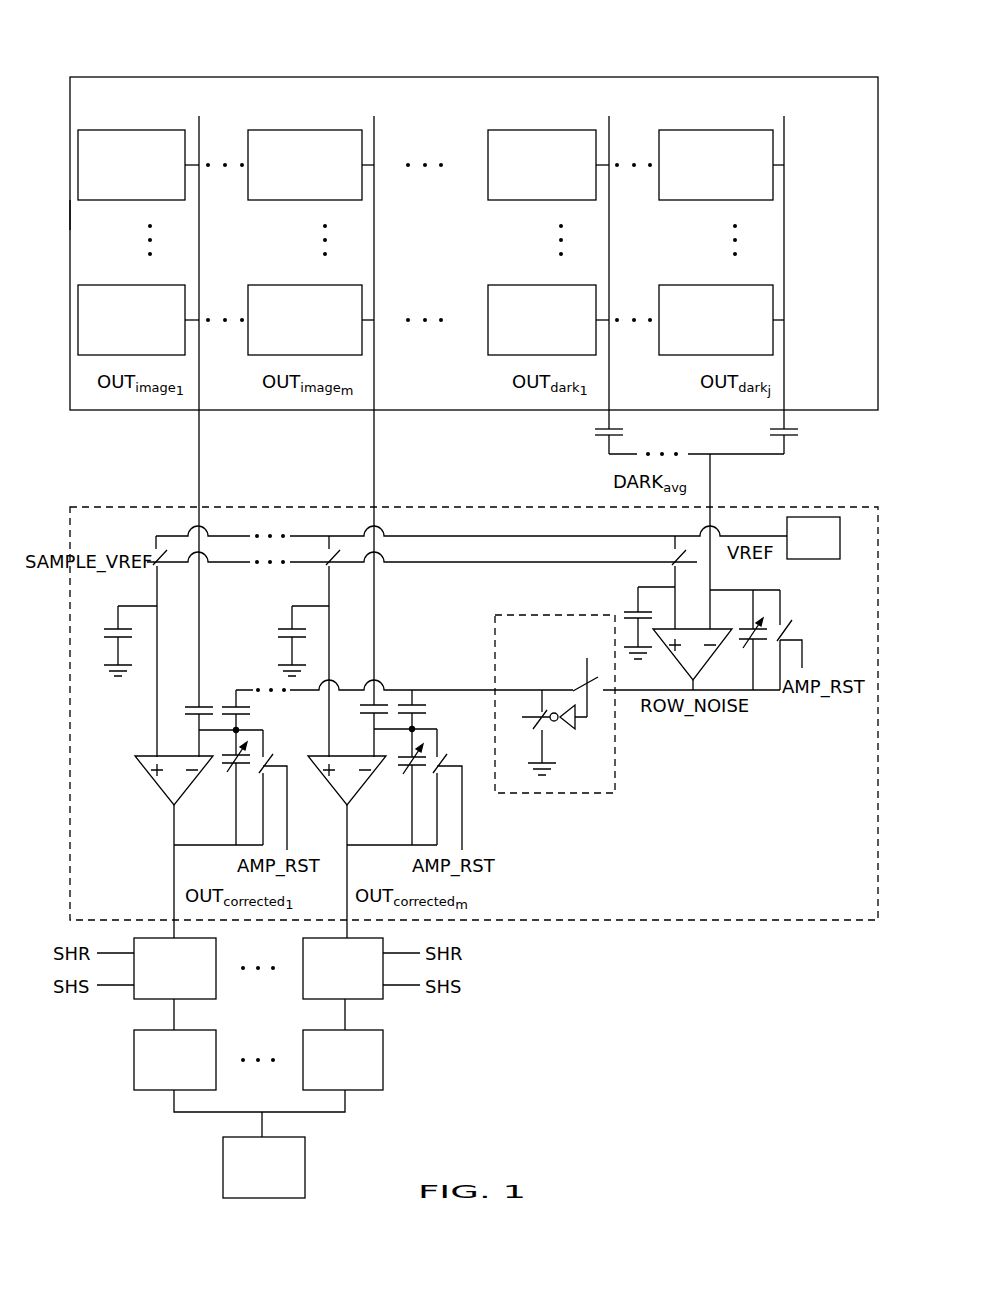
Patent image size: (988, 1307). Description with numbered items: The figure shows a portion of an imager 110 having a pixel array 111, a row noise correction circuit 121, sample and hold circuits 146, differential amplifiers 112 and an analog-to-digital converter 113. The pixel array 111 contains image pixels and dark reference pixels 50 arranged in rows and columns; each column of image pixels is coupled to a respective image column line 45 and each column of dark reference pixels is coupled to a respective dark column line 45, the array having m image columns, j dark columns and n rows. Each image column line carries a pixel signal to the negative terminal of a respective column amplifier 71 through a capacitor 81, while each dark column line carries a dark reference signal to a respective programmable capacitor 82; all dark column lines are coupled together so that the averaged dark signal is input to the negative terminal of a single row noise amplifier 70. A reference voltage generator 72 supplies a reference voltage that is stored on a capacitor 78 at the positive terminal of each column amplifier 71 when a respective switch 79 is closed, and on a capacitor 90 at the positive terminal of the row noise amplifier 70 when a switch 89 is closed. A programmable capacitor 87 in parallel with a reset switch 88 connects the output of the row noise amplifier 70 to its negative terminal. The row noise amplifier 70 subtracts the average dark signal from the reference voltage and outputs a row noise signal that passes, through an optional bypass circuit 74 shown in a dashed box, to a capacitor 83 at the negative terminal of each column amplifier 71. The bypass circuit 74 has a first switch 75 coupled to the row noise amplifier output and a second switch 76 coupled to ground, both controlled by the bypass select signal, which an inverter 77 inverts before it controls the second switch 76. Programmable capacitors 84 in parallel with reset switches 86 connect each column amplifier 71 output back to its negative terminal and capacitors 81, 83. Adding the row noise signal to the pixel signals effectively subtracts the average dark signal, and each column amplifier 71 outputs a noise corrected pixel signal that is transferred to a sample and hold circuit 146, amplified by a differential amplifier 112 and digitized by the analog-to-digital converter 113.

The imager 110 is at (95, 59).
The pixel array 111 is at (70, 218).
The pixel 50 is at (431, 242).
The column line 45 is at (199, 243).
The programmable capacitor 82 is at (594, 434).
The row noise correction circuit 121 is at (69, 669).
The reference voltage generator 72 is at (803, 549).
The switch 79 is at (158, 568).
The capacitor 78 is at (112, 628).
The capacitor 81 is at (187, 706).
The capacitor 83 is at (230, 706).
The programmable capacitor 84 is at (232, 779).
The reset switch 86 is at (266, 762).
The column amplifier 71 is at (164, 792).
The bypass circuit 74 is at (616, 744).
The first switch 75 is at (581, 680).
The second switch 76 is at (541, 716).
The inverter 77 is at (573, 731).
The row noise amplifier 70 is at (685, 662).
The capacitor 90 is at (628, 606).
The switch 89 is at (678, 568).
The programmable capacitor 87 is at (760, 641).
The reset switch 88 is at (788, 624).
The sample and hold circuit 146 is at (197, 983).
The differential amplifier 112 is at (197, 1075).
The analog-to-digital converter 113 is at (248, 1180).